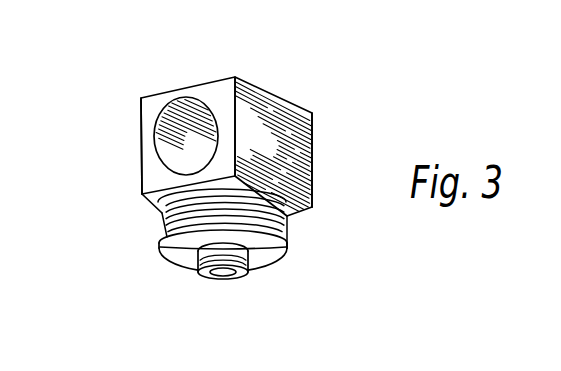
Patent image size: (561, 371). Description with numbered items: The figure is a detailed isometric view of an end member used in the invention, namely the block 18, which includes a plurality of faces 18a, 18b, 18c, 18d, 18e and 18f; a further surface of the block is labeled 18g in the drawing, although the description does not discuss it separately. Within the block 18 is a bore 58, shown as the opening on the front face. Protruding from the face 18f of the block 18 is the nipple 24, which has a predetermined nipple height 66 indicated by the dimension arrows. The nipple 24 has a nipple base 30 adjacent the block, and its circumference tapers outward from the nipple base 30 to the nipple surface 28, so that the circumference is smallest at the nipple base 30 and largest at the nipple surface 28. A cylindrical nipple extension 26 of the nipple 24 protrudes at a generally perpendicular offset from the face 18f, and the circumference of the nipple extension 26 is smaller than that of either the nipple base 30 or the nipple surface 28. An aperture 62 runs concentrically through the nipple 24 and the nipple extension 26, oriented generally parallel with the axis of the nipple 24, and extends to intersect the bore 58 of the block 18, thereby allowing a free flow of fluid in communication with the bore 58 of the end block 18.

The block 18 is at (325, 97).
The face 18a is at (135, 176).
The face 18b is at (150, 110).
The face 18c is at (227, 77).
The face 18d is at (270, 137).
The face 18e is at (313, 147).
The face 18f is at (293, 211).
The flange edge surface 18g is at (288, 226).
The bore 58 is at (173, 140).
The nipple base 30 is at (160, 214).
The nipple surface 28 is at (265, 258).
The nipple extension 26 is at (254, 270).
The aperture 62 is at (223, 275).
The nipple height 66 is at (290, 217).
The nipple 24 is at (118, 278).